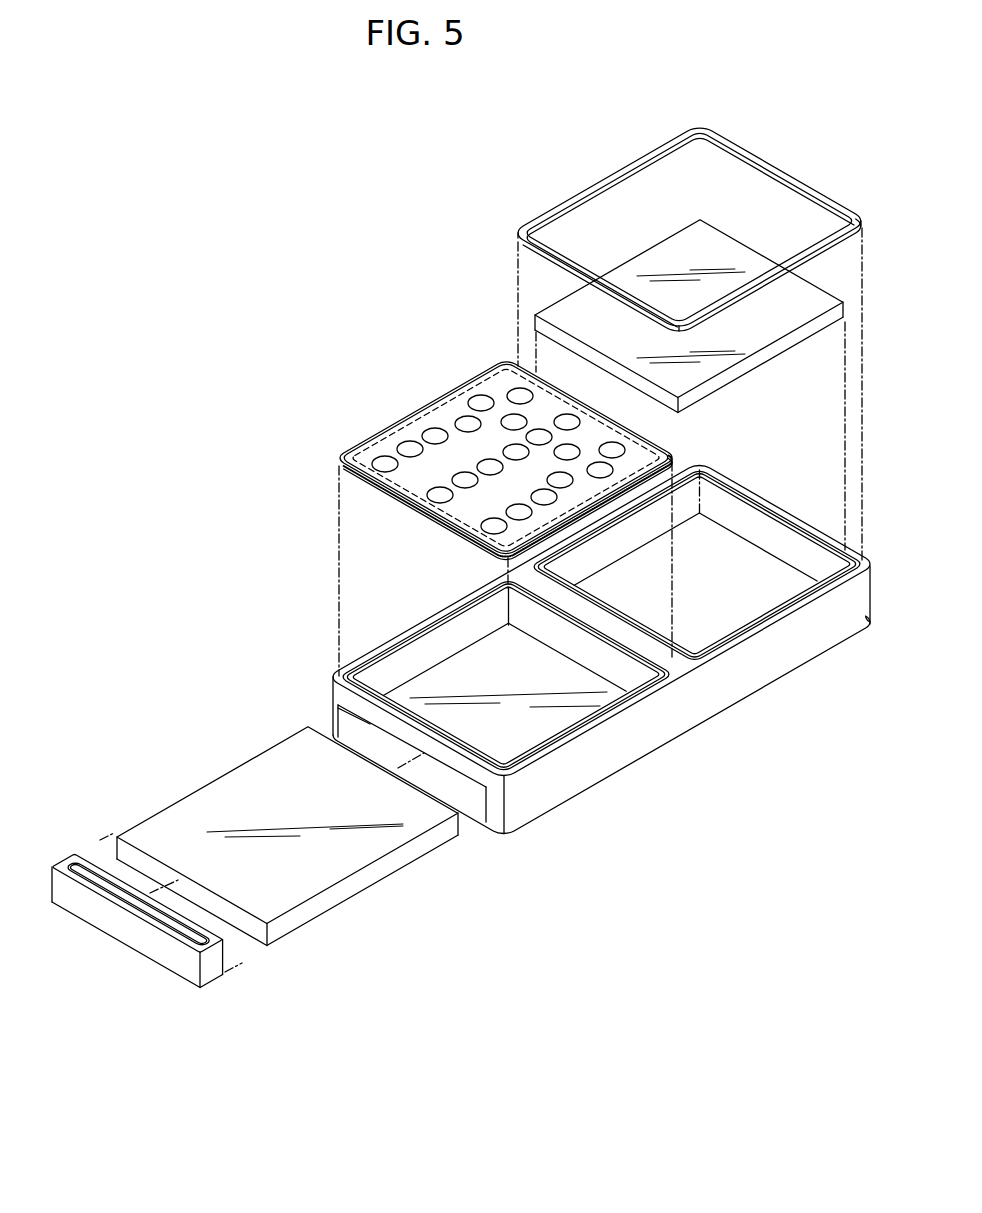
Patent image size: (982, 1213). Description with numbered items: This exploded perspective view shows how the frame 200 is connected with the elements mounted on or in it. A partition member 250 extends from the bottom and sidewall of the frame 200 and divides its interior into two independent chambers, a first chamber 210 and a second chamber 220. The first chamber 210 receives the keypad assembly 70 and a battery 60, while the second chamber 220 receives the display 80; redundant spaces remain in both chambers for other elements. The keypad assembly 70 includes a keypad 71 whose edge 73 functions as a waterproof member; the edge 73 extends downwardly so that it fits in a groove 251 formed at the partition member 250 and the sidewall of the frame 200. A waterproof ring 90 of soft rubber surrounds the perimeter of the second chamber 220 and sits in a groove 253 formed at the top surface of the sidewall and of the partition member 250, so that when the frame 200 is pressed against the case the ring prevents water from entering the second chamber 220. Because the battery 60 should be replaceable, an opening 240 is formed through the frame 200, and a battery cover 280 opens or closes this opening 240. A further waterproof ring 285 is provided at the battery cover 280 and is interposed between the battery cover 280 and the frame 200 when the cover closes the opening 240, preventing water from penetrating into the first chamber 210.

The battery 60 is at (350, 882).
The keypad assembly 70 is at (404, 394).
The keypad 71 is at (462, 405).
The edge 73 is at (423, 521).
The display 80 is at (649, 250).
The waterproof ring 90 is at (577, 200).
The frame 200 is at (713, 724).
The first chamber 210 is at (497, 684).
The second chamber 220 is at (733, 592).
The opening 240 is at (473, 798).
The partition member 250 is at (643, 655).
The groove 251 is at (418, 630).
The groove 253 is at (767, 510).
The battery cover 280 is at (187, 973).
The waterproof ring 285 is at (78, 855).